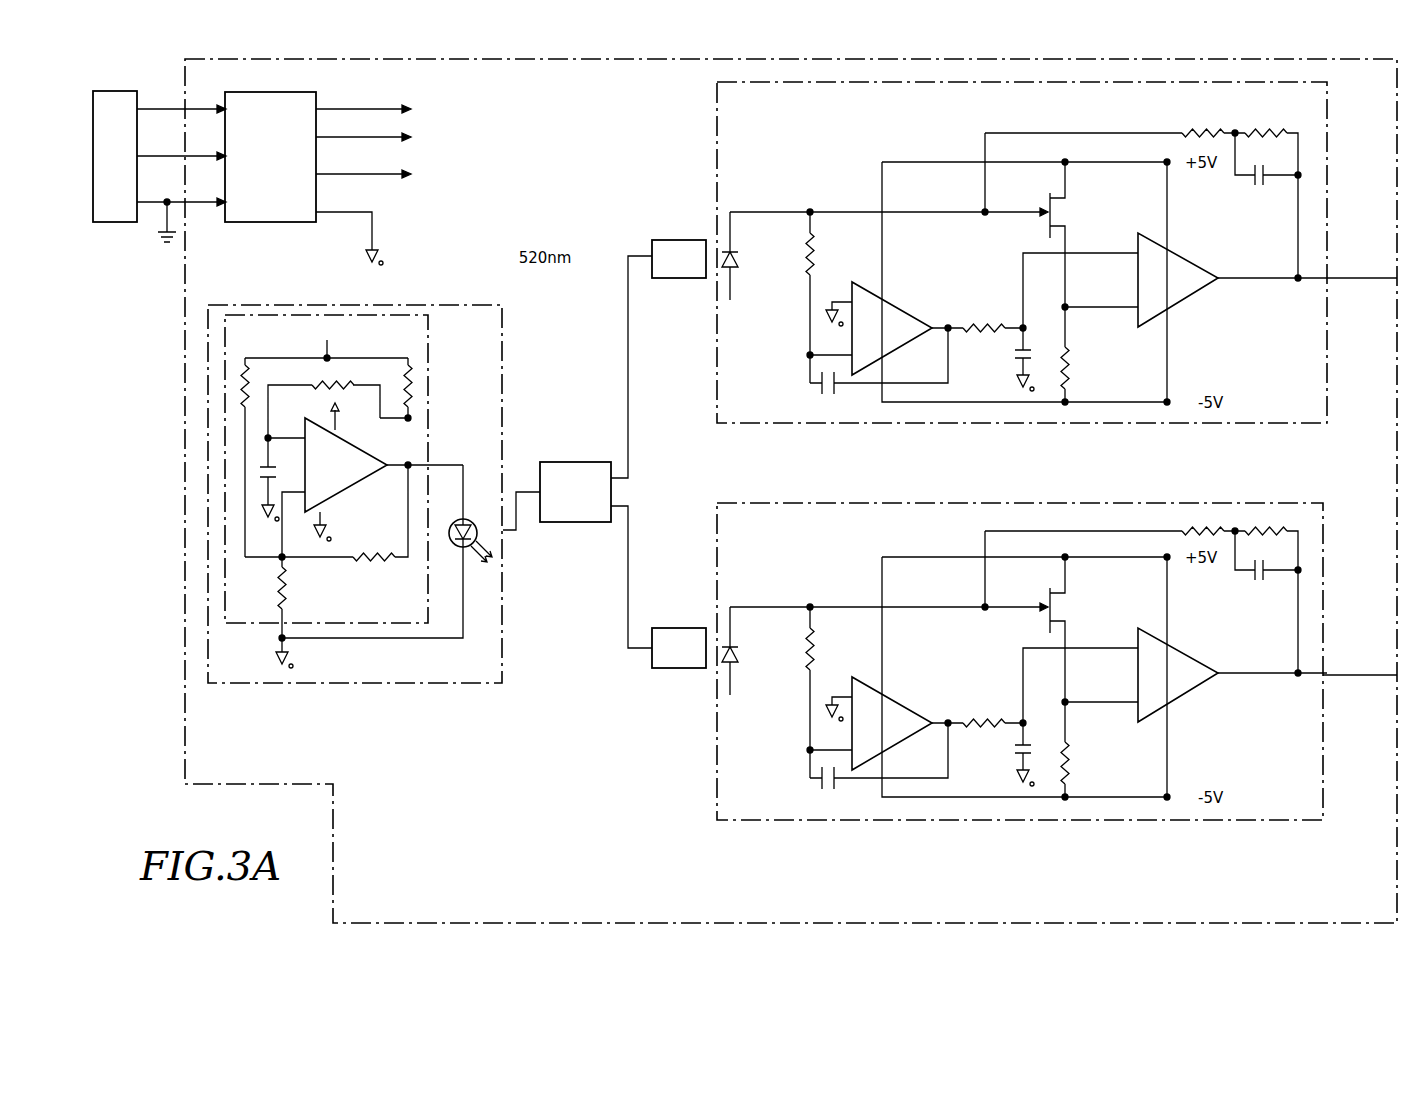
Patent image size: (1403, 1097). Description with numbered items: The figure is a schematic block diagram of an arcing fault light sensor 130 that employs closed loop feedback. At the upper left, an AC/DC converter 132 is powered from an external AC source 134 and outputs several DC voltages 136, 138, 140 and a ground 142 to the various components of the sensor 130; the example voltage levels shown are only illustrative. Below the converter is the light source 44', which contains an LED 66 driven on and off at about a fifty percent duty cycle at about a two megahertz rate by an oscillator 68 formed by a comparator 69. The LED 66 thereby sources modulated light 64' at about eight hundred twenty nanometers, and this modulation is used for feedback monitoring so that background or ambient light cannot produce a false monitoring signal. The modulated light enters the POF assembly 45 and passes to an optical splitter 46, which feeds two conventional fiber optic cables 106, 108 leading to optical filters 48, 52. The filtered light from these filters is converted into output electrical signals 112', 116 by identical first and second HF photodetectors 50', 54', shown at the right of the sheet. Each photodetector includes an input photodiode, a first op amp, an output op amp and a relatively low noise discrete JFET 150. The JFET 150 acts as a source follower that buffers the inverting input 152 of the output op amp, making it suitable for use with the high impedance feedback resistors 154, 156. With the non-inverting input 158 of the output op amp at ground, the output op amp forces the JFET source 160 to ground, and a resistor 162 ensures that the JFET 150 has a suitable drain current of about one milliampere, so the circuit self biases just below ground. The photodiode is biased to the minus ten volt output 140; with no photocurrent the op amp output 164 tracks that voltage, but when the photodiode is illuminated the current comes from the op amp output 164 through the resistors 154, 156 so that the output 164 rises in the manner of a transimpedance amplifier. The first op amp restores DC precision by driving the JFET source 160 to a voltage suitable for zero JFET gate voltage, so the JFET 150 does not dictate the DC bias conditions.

The arcing fault light sensor 130 is at (184, 484).
The external AC source 134 is at (110, 223).
The AC/DC converter 132 is at (253, 223).
The DC voltage 136 is at (330, 108).
The DC voltage 138 is at (330, 136).
The DC voltage 140 is at (330, 173).
The ground 142 is at (330, 211).
The light source 44' is at (355, 532).
The oscillator 68 is at (429, 376).
The comparator 69 is at (362, 477).
The LED 66 is at (468, 520).
The modulated light 64' is at (479, 572).
The POF assembly 45 is at (529, 510).
The optical splitter 46 is at (574, 460).
The optical filter 48 is at (662, 238).
The optical filter 52 is at (664, 669).
The fiber optic cable 106 is at (628, 357).
The fiber optic cable 108 is at (628, 622).
The first HF photodetector 50' is at (1022, 277).
The second HF photodetector 54' is at (1020, 687).
The JFET 150 is at (1048, 197).
The JFET source 160 is at (1054, 241).
The non-inverting input 158 is at (1136, 252).
The inverting input 152 is at (1136, 309).
The resistor 162 is at (1070, 377).
The feedback resistor 156 is at (1190, 131).
The feedback resistor 154 is at (1272, 131).
The op amp output 164 is at (1270, 277).
The output electrical signal 112' is at (1362, 246).
The output electrical signal 116 is at (1355, 677).